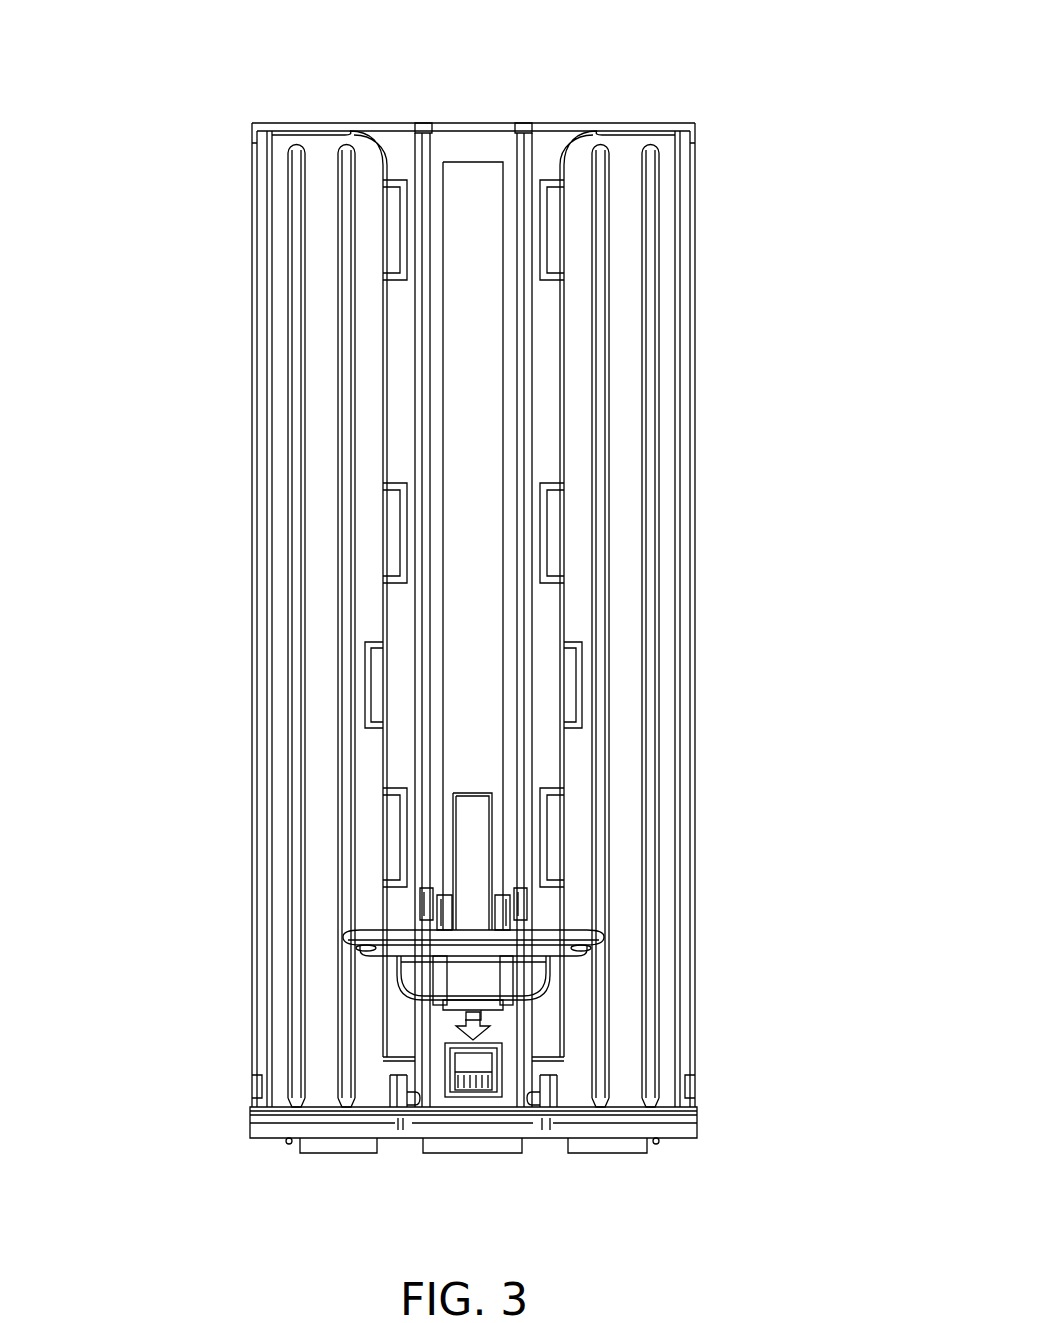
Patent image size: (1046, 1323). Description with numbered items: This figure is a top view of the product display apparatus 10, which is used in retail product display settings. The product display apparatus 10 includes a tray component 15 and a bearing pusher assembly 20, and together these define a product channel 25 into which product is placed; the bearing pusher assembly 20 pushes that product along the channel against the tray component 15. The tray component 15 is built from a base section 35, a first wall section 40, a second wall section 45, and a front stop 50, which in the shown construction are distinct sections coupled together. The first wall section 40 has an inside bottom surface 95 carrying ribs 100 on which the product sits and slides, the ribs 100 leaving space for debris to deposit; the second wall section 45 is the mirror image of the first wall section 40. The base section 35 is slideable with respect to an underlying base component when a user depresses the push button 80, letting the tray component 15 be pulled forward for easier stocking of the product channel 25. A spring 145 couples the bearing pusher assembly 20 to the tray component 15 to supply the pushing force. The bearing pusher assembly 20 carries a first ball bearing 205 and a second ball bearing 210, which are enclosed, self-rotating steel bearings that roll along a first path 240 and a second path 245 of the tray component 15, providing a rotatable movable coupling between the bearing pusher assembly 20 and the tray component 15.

The product display apparatus 10 is at (140, 949).
The tray component 15 is at (550, 125).
The bearing pusher assembly 20 is at (590, 925).
The product channel 25 is at (634, 1027).
The base section 35 is at (405, 140).
The first wall section 40 is at (252, 210).
The second wall section 45 is at (693, 190).
The front stop 50 is at (652, 1148).
The push button 80 is at (450, 1092).
The inside bottom surface 95 is at (320, 145).
The ribs 100 is at (340, 172).
The spring 145 is at (485, 810).
The first ball bearing 205 is at (423, 902).
The second ball bearing 210 is at (558, 873).
The first path 240 is at (427, 770).
The second path 245 is at (532, 658).